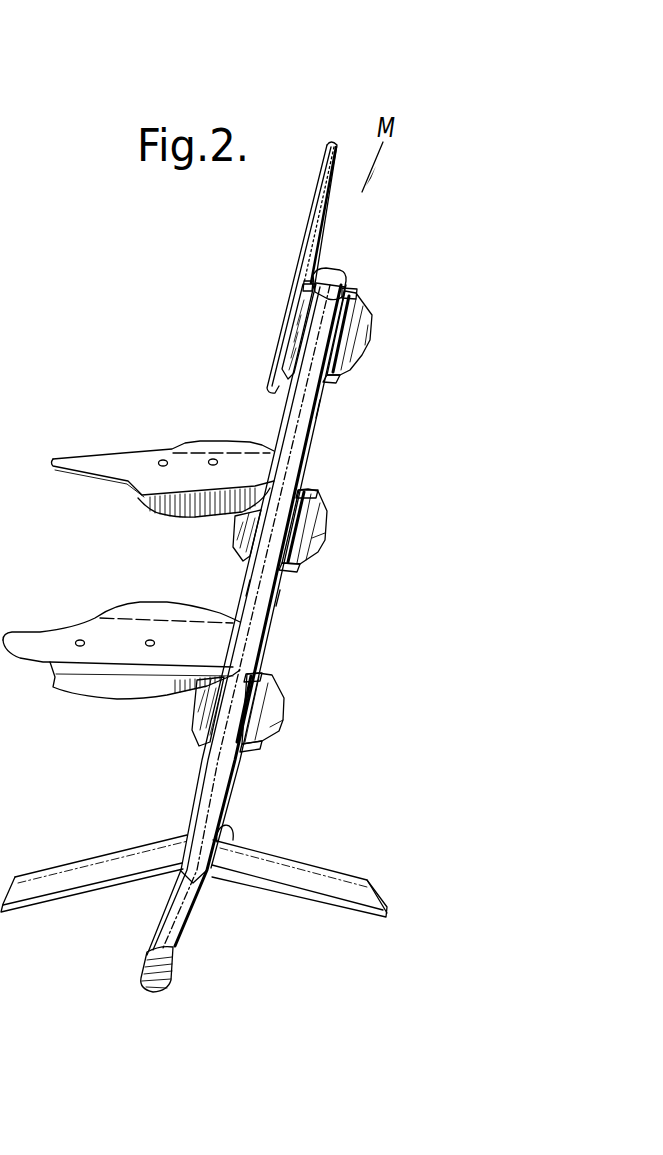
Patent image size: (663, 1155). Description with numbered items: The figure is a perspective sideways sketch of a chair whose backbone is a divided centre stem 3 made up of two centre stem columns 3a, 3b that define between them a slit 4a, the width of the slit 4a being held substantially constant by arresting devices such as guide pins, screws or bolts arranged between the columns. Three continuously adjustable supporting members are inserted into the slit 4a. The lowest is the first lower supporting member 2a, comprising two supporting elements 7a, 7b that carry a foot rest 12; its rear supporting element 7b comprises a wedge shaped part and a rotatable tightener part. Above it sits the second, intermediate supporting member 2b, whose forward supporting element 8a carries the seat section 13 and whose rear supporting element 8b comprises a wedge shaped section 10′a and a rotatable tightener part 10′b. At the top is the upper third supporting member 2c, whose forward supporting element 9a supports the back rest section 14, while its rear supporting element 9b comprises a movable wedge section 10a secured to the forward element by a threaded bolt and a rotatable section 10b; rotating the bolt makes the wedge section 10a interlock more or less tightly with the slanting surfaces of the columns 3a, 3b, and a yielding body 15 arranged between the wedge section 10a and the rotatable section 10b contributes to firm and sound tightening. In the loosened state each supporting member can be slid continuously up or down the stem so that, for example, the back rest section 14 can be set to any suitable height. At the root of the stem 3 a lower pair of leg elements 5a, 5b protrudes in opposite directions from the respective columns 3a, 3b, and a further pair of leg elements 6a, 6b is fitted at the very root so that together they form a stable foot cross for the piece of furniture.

The divided centre stem 3 is at (288, 413).
The centre stem column 3a is at (275, 600).
The centre stem column 3b is at (243, 593).
The slit 4a is at (316, 418).
The back rest section 14 is at (305, 227).
The seat section 13 is at (128, 459).
The foot rest 12 is at (97, 672).
The forward supporting element 9a is at (300, 337).
The rear supporting element 9b is at (351, 367).
The movable wedge section 10a is at (353, 270).
The rotatable section 10b is at (373, 297).
The upper third supporting member 2c is at (377, 323).
The yielding body 15 is at (365, 336).
The forward supporting element 8a is at (232, 537).
The rear supporting element 8b is at (308, 561).
The second additional supporting member 2b is at (332, 522).
The wedge shaped section 10′a is at (302, 490).
The rotatable tightener part 10′b is at (312, 537).
The supporting element 7a is at (203, 727).
The rear supporting element 7b is at (272, 738).
The first lower supporting member 2a is at (287, 710).
The leg element 6a is at (80, 873).
The leg element 6b is at (313, 878).
The leg element 5a is at (236, 830).
The leg element 5b is at (182, 945).